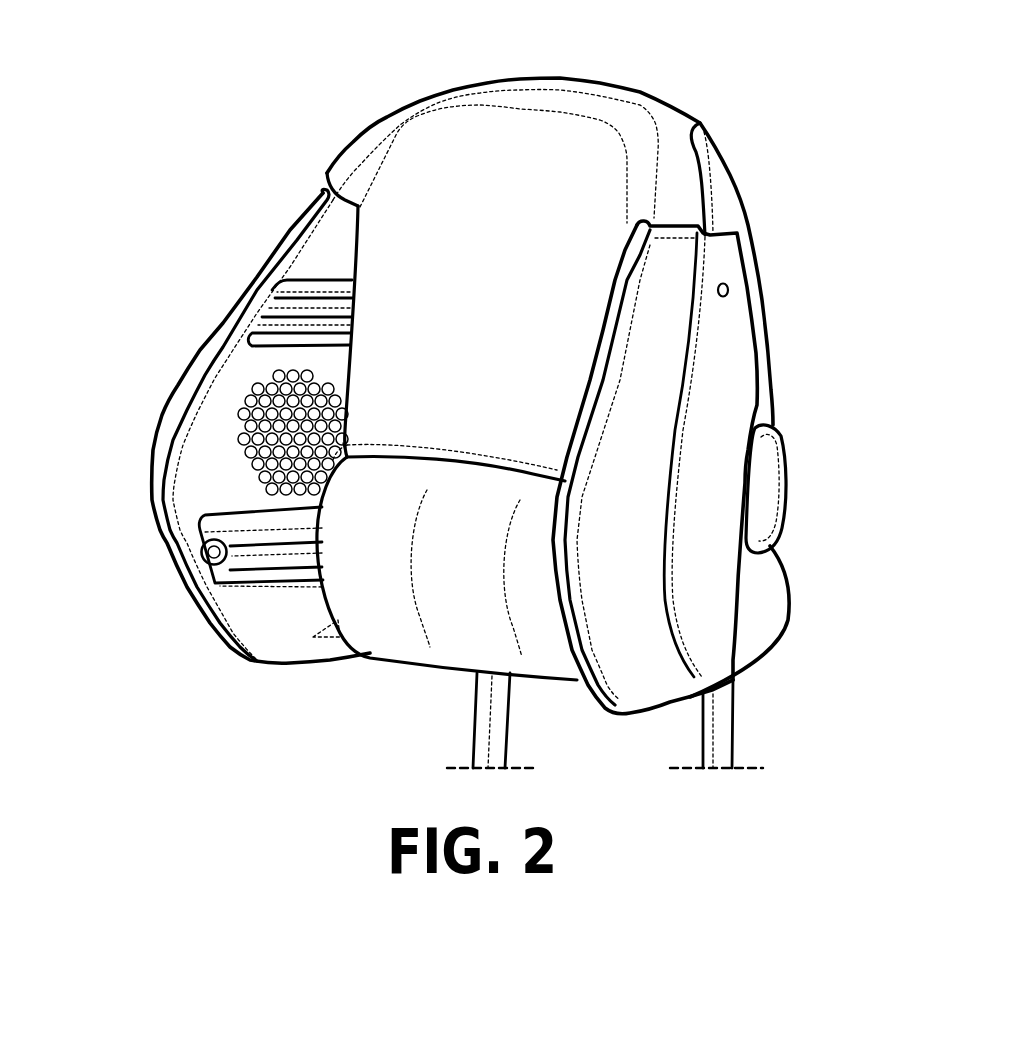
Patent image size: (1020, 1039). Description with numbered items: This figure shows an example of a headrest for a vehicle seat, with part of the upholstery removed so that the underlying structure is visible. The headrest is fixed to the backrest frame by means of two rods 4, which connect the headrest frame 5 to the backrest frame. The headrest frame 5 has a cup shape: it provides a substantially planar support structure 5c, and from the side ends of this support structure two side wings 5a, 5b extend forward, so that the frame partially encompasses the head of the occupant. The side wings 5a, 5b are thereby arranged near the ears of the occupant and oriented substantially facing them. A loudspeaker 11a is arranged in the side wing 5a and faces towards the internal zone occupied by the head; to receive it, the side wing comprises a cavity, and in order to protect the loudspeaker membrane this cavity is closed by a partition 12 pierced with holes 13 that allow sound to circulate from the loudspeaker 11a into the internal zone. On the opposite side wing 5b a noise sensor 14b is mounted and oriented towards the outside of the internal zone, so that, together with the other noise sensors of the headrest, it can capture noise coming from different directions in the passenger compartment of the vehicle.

The headrest frame 5 is at (343, 150).
The side wing 5a is at (150, 457).
The side wing 5b is at (593, 493).
The support structure 5c is at (523, 137).
The partition 12 is at (228, 351).
The holes 13 is at (273, 420).
The loudspeaker 11a is at (297, 444).
The noise sensor 14b is at (730, 288).
The rods 4 is at (718, 743).